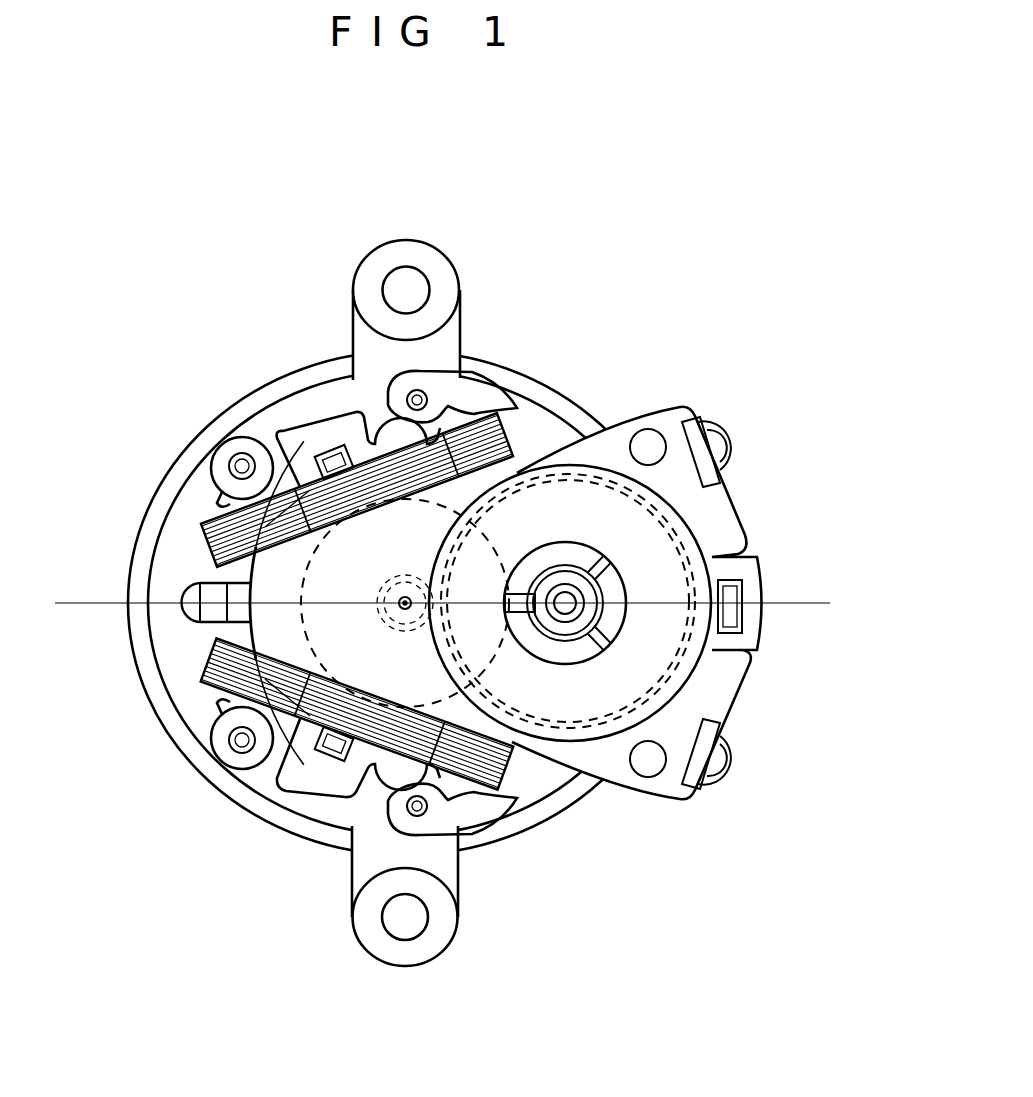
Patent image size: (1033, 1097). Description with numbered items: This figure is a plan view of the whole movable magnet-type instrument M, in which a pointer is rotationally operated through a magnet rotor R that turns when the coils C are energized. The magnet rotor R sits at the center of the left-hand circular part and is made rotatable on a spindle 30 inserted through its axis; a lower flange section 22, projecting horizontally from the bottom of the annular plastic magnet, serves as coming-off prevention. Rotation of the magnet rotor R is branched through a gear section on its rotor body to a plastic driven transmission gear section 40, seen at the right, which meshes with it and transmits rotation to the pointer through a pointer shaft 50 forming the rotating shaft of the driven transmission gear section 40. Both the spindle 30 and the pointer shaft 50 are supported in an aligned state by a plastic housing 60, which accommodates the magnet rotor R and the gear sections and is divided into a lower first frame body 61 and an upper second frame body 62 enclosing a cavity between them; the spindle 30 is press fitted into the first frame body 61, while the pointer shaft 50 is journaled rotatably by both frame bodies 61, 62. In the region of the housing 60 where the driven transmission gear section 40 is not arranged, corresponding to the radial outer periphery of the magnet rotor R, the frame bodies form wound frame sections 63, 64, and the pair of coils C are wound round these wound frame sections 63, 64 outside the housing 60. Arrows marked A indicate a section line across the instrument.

The movable magnet-type instrument M is at (641, 306).
The lower flange section 22 is at (415, 625).
The spindle 30 is at (408, 603).
The driven transmission gear section 40 is at (680, 537).
The pointer shaft 50 is at (567, 603).
The housing 60 is at (770, 579).
The first frame body 61 is at (317, 803).
The second frame body 62 is at (640, 680).
The wound frame section 63 is at (222, 497).
The wound frame section 64 is at (222, 709).
The coils C is at (512, 415).
The magnet rotor R is at (490, 544).
The section line A- A is at (72, 612).